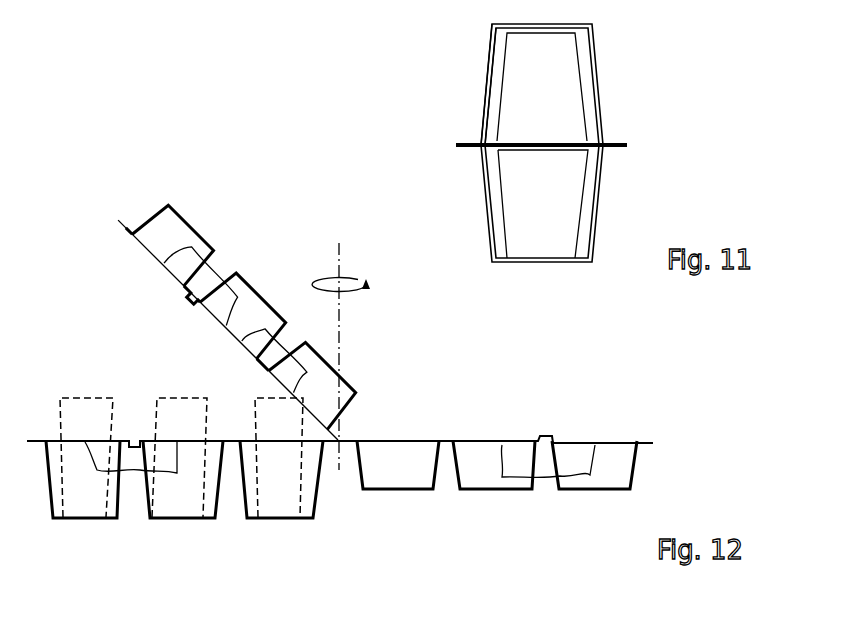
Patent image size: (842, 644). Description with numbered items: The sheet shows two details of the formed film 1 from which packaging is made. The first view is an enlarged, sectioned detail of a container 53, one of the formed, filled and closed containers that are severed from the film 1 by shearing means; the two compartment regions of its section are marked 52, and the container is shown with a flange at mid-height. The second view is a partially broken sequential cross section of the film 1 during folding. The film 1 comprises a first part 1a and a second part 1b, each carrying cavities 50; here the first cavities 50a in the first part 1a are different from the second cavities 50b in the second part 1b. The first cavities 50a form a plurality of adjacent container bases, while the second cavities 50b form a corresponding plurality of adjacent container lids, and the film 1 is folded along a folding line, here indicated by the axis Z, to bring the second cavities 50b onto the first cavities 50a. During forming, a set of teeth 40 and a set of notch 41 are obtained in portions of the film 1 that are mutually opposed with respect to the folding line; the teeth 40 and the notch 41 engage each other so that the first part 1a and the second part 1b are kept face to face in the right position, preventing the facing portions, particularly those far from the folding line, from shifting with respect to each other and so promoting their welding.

In FIG. 12, the film 1 is at (655, 442).
In FIG. 12, the first part of film 1a is at (196, 540).
In FIG. 12, the second part of film 1b is at (481, 532).
In FIG. 12, the teeth 40 is at (190, 303).
In FIG. 12, the notch 41 is at (135, 440).
In FIG. 11, the cavities 50 is at (490, 75).
In FIG. 12, the first cavities 50a is at (52, 488).
In FIG. 12, the second cavities 50b is at (153, 222).
In FIG. 11, the pot compartment 52 is at (563, 108).
In FIG. 11, the container 53 is at (640, 44).
In FIG. 12, the axis of rotation Z is at (337, 250).